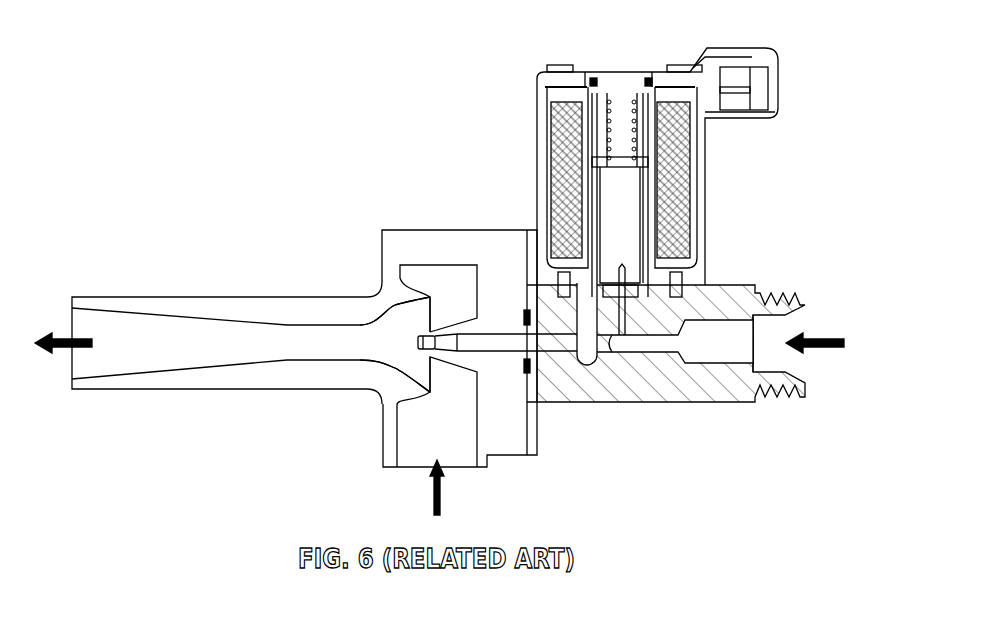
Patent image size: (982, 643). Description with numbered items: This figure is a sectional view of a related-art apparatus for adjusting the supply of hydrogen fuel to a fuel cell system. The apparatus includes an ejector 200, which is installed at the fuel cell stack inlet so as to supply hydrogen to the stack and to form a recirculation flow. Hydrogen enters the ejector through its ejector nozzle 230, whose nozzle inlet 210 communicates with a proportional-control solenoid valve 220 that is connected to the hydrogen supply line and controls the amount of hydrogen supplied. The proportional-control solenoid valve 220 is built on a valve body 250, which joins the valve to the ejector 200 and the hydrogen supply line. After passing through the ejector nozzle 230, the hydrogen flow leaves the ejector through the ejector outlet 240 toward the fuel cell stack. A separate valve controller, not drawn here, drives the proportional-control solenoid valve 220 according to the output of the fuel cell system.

The ejector 200 is at (385, 230).
The nozzle inlet 210 is at (483, 345).
The proportional-control solenoid valve 220 is at (522, 103).
The ejector nozzle 230 is at (410, 308).
The ejector outlet 240 is at (73, 327).
The valve body 250 is at (637, 392).